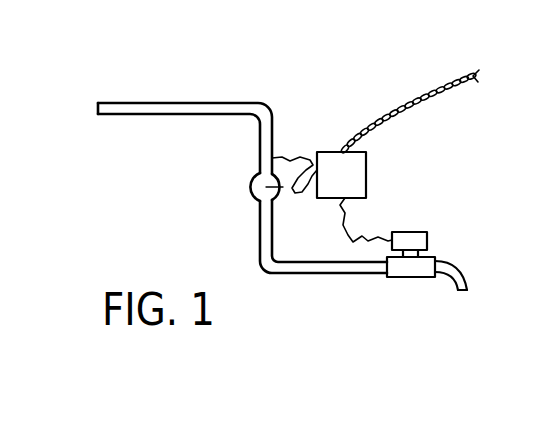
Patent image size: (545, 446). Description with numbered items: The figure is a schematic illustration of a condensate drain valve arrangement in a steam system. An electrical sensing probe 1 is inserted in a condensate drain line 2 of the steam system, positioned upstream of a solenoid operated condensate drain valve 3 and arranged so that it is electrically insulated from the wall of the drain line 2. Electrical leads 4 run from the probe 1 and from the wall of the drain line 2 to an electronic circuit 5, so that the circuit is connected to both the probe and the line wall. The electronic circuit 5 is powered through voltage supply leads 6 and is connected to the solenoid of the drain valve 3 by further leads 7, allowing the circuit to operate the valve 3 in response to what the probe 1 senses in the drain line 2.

The electrical sensing probe 1 is at (257, 193).
The condensate drain line 2 is at (235, 104).
The solenoid operated condensate drain valve 3 is at (400, 268).
The electrical leads 4 is at (297, 146).
The electronic circuit 5 is at (341, 175).
The voltage supply leads 6 is at (378, 101).
The leads 7 is at (375, 211).